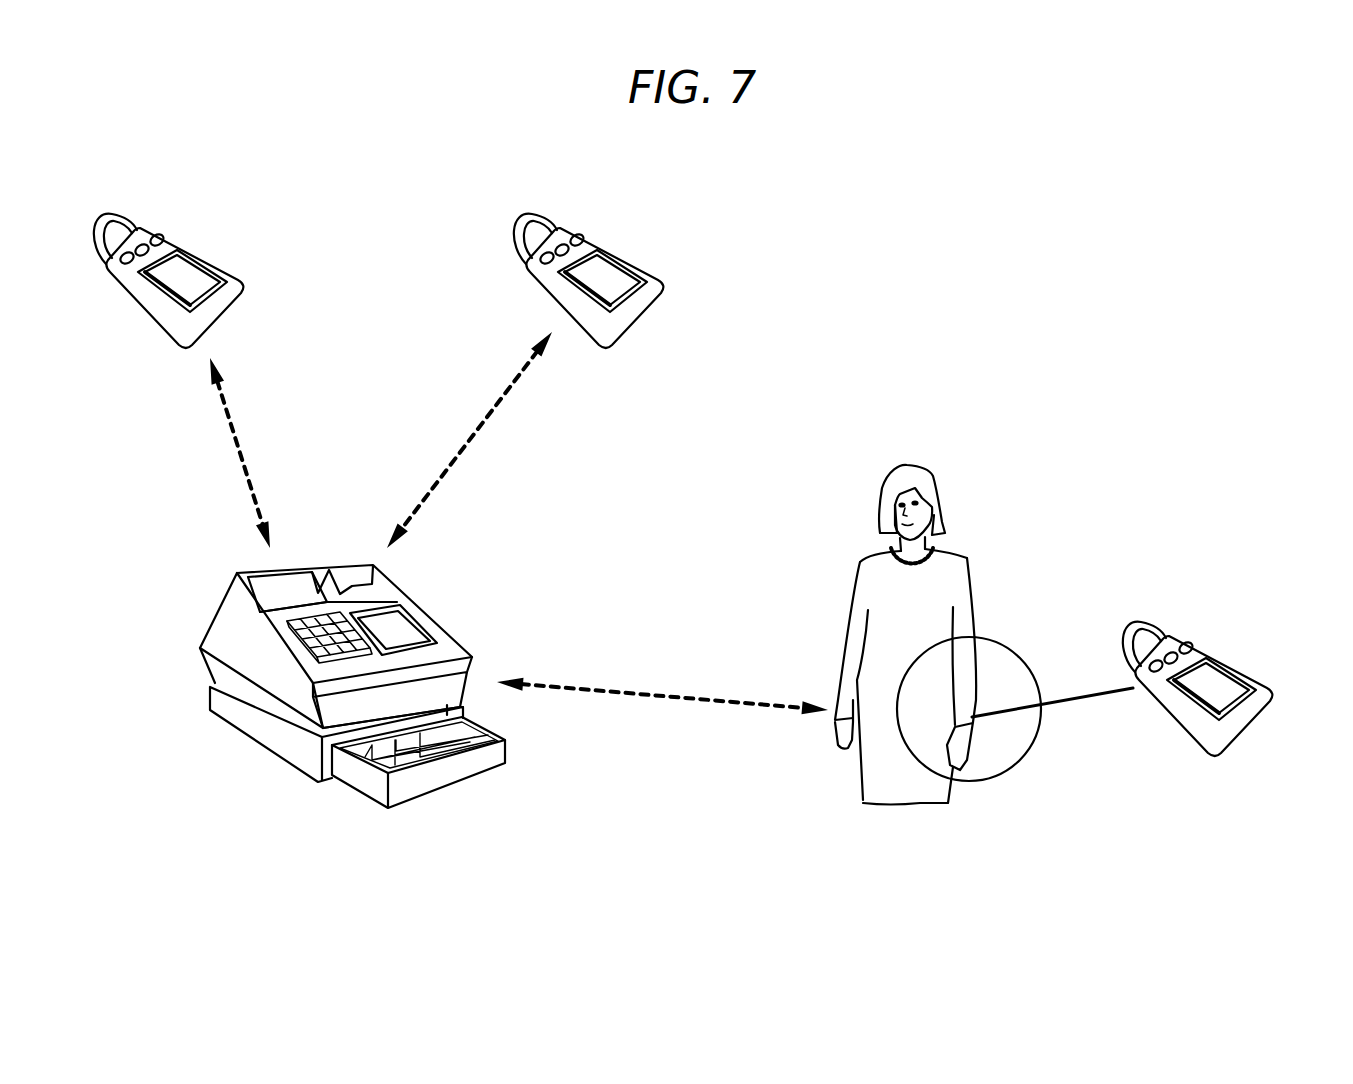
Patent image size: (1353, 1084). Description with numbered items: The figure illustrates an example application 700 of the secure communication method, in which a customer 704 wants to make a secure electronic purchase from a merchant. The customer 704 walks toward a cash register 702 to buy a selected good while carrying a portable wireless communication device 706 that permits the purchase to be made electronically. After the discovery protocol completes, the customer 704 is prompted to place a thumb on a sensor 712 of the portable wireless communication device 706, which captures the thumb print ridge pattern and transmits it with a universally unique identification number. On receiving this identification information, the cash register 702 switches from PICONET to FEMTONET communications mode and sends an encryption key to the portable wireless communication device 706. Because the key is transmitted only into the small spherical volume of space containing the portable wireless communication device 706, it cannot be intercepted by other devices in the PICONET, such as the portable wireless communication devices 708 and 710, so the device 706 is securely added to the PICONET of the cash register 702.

The application 700 is at (903, 295).
The cash register 702 is at (388, 580).
The customer 704 is at (970, 560).
The portable wireless communication device 706 is at (1225, 718).
The portable wireless communication device 708 is at (653, 272).
The portable wireless communication device 710 is at (233, 272).
The sensor 712 is at (1220, 683).